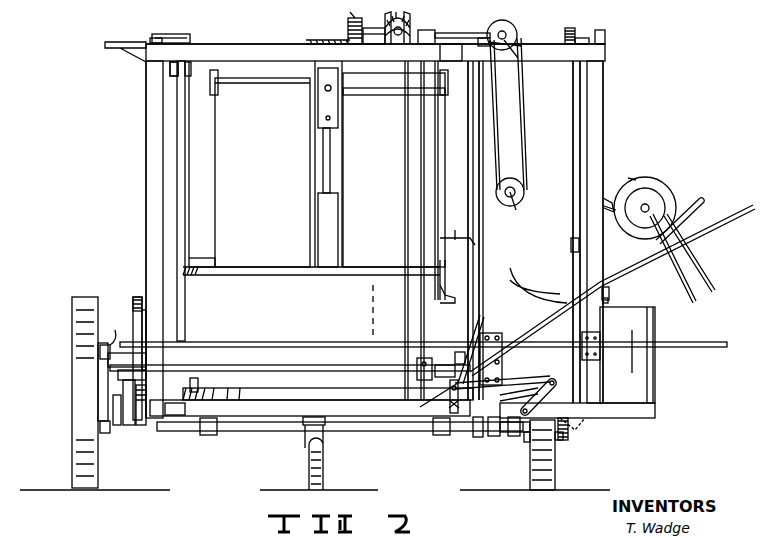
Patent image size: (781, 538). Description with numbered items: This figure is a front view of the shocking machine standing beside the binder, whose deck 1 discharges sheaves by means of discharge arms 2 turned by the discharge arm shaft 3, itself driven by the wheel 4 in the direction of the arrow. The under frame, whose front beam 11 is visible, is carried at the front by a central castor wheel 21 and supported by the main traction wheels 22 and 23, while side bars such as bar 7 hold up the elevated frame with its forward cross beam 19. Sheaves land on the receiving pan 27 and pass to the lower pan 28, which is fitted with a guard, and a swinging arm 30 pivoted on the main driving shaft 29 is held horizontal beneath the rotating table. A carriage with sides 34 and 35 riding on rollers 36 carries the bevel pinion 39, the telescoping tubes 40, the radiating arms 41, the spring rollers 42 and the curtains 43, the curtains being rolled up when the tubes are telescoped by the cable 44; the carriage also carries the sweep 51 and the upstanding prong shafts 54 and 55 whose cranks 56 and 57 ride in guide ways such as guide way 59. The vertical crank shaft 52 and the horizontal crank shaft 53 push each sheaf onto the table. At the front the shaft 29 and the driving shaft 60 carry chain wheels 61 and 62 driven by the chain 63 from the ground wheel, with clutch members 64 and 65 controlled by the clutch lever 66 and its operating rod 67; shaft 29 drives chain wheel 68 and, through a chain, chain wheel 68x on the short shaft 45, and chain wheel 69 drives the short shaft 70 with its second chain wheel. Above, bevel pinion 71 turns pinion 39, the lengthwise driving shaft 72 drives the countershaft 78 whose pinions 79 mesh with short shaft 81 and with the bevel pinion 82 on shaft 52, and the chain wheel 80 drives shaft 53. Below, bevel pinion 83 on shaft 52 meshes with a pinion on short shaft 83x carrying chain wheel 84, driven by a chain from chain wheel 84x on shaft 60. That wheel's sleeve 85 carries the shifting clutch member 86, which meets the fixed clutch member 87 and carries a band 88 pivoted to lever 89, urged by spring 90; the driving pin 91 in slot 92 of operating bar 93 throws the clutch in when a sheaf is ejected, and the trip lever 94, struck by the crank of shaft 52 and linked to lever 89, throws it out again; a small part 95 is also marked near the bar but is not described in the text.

The deck 1 is at (742, 192).
The discharge arms 2 is at (606, 207).
The discharge arm shaft 3 is at (668, 190).
The wheel 4 is at (624, 183).
The side bar 7 is at (150, 160).
The front beam 11 is at (372, 433).
The cross beam 19 is at (277, 50).
The castor wheel 21 is at (302, 466).
The main traction wheel 22 is at (74, 470).
The main traction wheel 23 is at (538, 492).
The receiving pan 27 is at (543, 283).
The second pan 28 is at (630, 419).
The main driving shaft 29 is at (275, 432).
The swinging arm 30 is at (440, 437).
The carriage side 34 is at (182, 160).
The carriage side 35 is at (476, 146).
The rollers 36 is at (166, 70).
The bevel pinion 39 is at (308, 40).
The telescoping tubes 40 is at (320, 160).
The radiating arms 41 is at (284, 79).
The spring rollers 42 is at (236, 78).
The curtains 43 is at (216, 204).
The cable 44 is at (340, 42).
The short shaft 45 is at (142, 296).
The sweep 51 is at (378, 292).
The crank shaft 52 is at (574, 152).
The crank shaft 53 is at (522, 201).
The shaft 54 is at (471, 168).
The shaft 55 is at (190, 178).
The crank 56 is at (482, 39).
The crank 57 is at (180, 34).
The guide way 59 is at (125, 47).
The driving shaft 60 is at (314, 348).
The chain wheel 61 is at (105, 358).
The chain wheel 62 is at (98, 444).
The chain 63 is at (100, 423).
The clutch member 64 is at (98, 354).
The clutch member 65 is at (125, 430).
The clutch lever 66 is at (113, 344).
The operating rod 67 is at (255, 346).
The chain wheel 68 is at (138, 432).
The chain wheel 68x is at (133, 300).
The chain wheel 69 is at (535, 442).
The short shaft 70 is at (449, 54).
The bevel pinion 71 is at (348, 28).
The driving shaft 72 is at (409, 22).
The countershaft 78 is at (462, 35).
The bevel pinion 79 is at (490, 25).
The chain wheel 80 is at (504, 196).
The short shaft 81 is at (510, 48).
The bevel pinion 82 is at (516, 44).
The bevel pinion 83 is at (580, 420).
The short shaft 83x is at (536, 439).
The chain wheel 84 is at (476, 438).
The chain wheel 84x is at (505, 344).
The sleeve 85 is at (448, 364).
The shifting clutch member 86 is at (460, 352).
The fixed clutch member 87 is at (416, 377).
The band 88 is at (484, 348).
The lever 89 is at (440, 388).
The spring 90 is at (457, 404).
The driving pin 91 is at (646, 262).
The slot 92 is at (702, 199).
The operating bar 93 is at (612, 280).
The trip lever 94 is at (552, 390).
The pin 95 is at (608, 303).